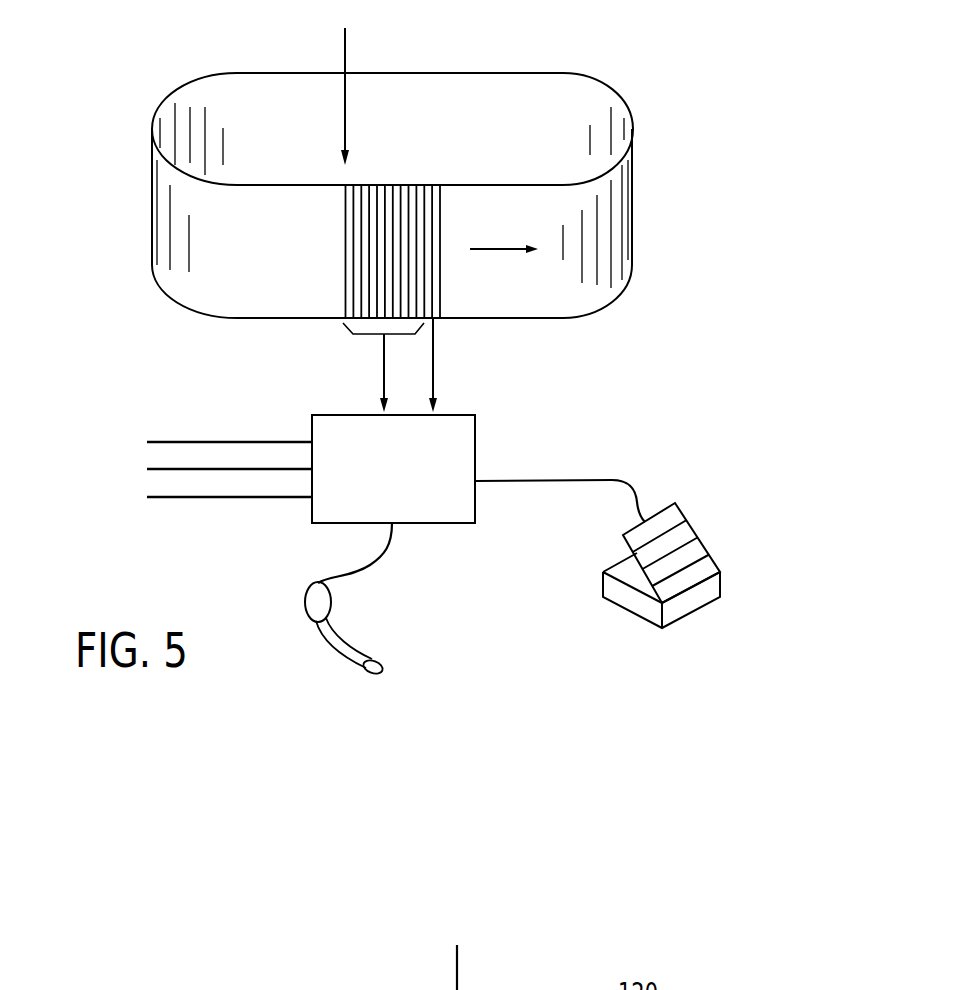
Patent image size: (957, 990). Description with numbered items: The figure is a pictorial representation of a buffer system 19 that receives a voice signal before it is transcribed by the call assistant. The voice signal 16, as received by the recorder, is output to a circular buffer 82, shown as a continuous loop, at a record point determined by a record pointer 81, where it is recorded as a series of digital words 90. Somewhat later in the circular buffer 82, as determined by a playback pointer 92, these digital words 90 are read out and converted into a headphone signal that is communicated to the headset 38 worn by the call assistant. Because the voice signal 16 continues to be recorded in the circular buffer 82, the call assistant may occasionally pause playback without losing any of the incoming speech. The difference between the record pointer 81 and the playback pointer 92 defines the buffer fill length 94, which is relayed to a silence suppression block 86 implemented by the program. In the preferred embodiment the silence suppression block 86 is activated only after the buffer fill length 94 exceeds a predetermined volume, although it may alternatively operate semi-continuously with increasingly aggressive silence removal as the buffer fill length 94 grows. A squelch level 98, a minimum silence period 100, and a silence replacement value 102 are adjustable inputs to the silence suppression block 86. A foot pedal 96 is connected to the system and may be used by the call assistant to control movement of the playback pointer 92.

The voice signal 16 is at (345, 42).
The record pointer 81 is at (345, 64).
The inspection system 19 is at (418, 162).
The circular buffer 82 is at (620, 100).
The digital words 90 is at (345, 284).
The buffer fill length 94 is at (363, 338).
The playback pointer 92 is at (433, 360).
The silence suppression block 86 is at (407, 482).
The squelch level 98 is at (195, 440).
The minimum silence period 100 is at (168, 467).
The silence replacement value 102 is at (190, 498).
The headset 38 is at (305, 605).
The foot pedal 96 is at (722, 580).